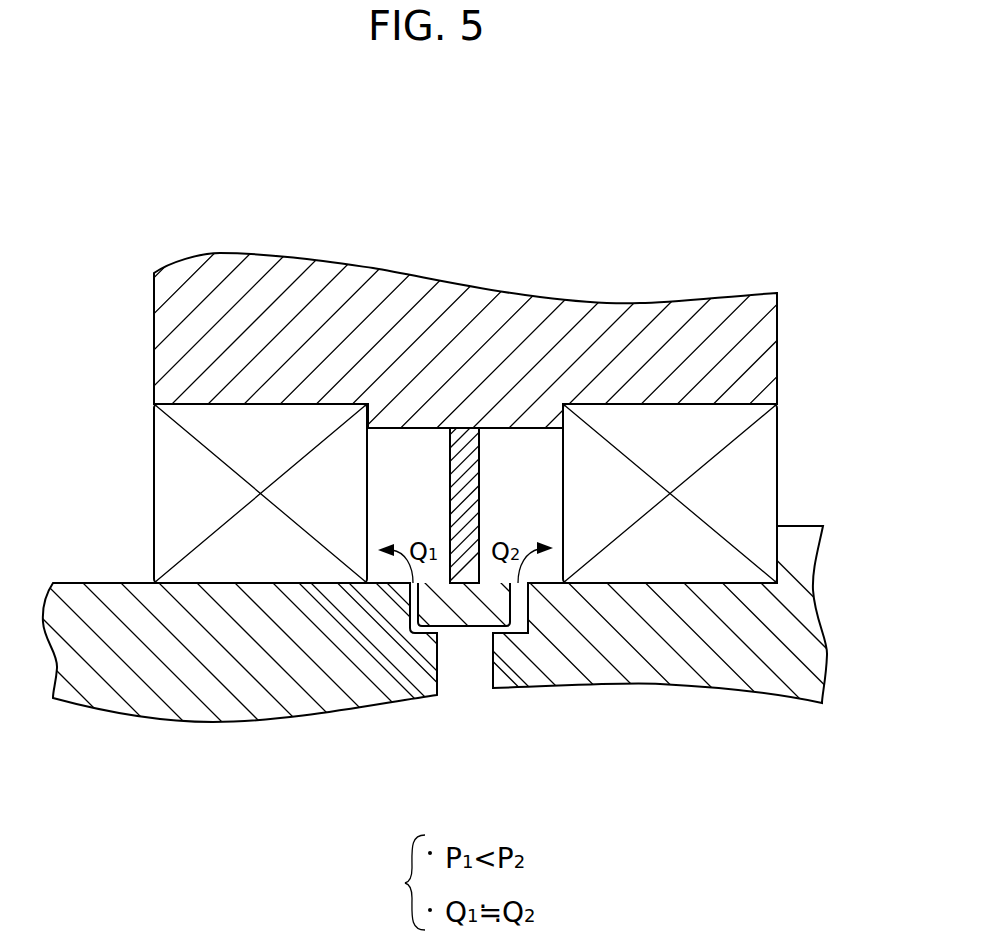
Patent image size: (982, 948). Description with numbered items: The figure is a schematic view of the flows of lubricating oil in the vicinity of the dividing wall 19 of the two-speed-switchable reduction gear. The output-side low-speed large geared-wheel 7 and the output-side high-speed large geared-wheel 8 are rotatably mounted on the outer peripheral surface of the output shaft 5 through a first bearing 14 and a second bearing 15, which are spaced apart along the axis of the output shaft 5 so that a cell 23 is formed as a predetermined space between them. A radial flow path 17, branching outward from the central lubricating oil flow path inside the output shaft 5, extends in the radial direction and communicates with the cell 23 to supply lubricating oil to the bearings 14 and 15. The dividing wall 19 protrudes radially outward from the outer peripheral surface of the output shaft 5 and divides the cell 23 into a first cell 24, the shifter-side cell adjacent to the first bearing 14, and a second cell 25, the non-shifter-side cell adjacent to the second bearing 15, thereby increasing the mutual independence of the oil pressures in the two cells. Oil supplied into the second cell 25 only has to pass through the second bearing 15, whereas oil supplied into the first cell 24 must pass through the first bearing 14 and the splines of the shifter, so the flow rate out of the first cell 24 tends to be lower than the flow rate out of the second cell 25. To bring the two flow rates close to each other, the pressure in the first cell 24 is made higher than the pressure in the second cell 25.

The output shaft 5 is at (117, 607).
The output-side low-speed large geared-wheel 7 is at (475, 340).
The output-side high-speed large geared-wheel 8 is at (740, 358).
The first bearing 14 is at (752, 462).
The second bearing 15 is at (178, 460).
The radial flow path 17 is at (466, 682).
The dividing wall 19 is at (462, 440).
The cell 23 is at (482, 331).
The first cell 24 is at (517, 445).
The second cell 25 is at (400, 445).